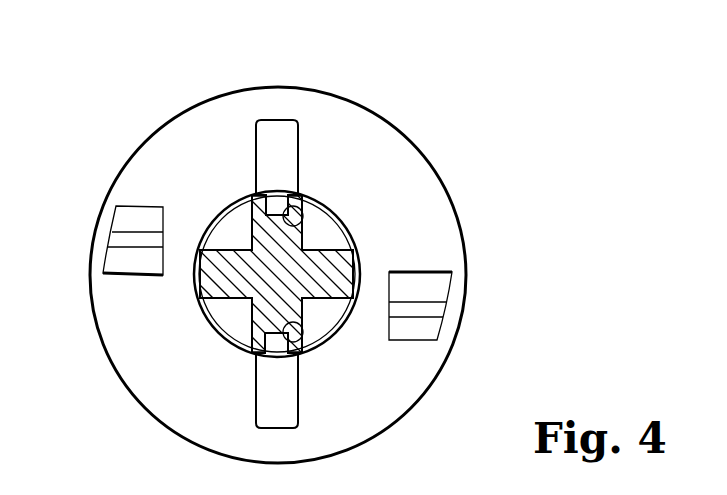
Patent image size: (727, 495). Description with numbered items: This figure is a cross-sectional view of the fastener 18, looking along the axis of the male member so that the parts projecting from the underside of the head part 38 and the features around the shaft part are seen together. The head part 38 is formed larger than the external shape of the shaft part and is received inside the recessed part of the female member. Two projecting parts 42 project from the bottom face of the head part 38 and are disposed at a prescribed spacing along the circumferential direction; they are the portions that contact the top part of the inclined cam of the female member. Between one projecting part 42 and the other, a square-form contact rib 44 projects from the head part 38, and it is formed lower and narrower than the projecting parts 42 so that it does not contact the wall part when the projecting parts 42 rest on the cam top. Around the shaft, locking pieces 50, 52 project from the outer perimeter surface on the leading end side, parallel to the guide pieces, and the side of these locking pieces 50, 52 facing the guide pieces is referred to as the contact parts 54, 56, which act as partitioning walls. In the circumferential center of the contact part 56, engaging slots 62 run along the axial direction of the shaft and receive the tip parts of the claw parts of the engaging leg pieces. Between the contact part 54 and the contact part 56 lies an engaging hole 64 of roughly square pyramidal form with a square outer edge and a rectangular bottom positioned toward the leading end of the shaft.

The fastener 18 is at (448, 78).
The head part 38 is at (432, 182).
The projecting parts 42 is at (112, 257).
The contact rib 44 is at (287, 128).
The locking piece 50 is at (195, 280).
The locking piece 52 is at (285, 197).
The contact part 54 is at (225, 295).
The contact part 56 is at (312, 214).
The engaging slots 62 is at (272, 203).
The engaging hole 64 is at (233, 243).